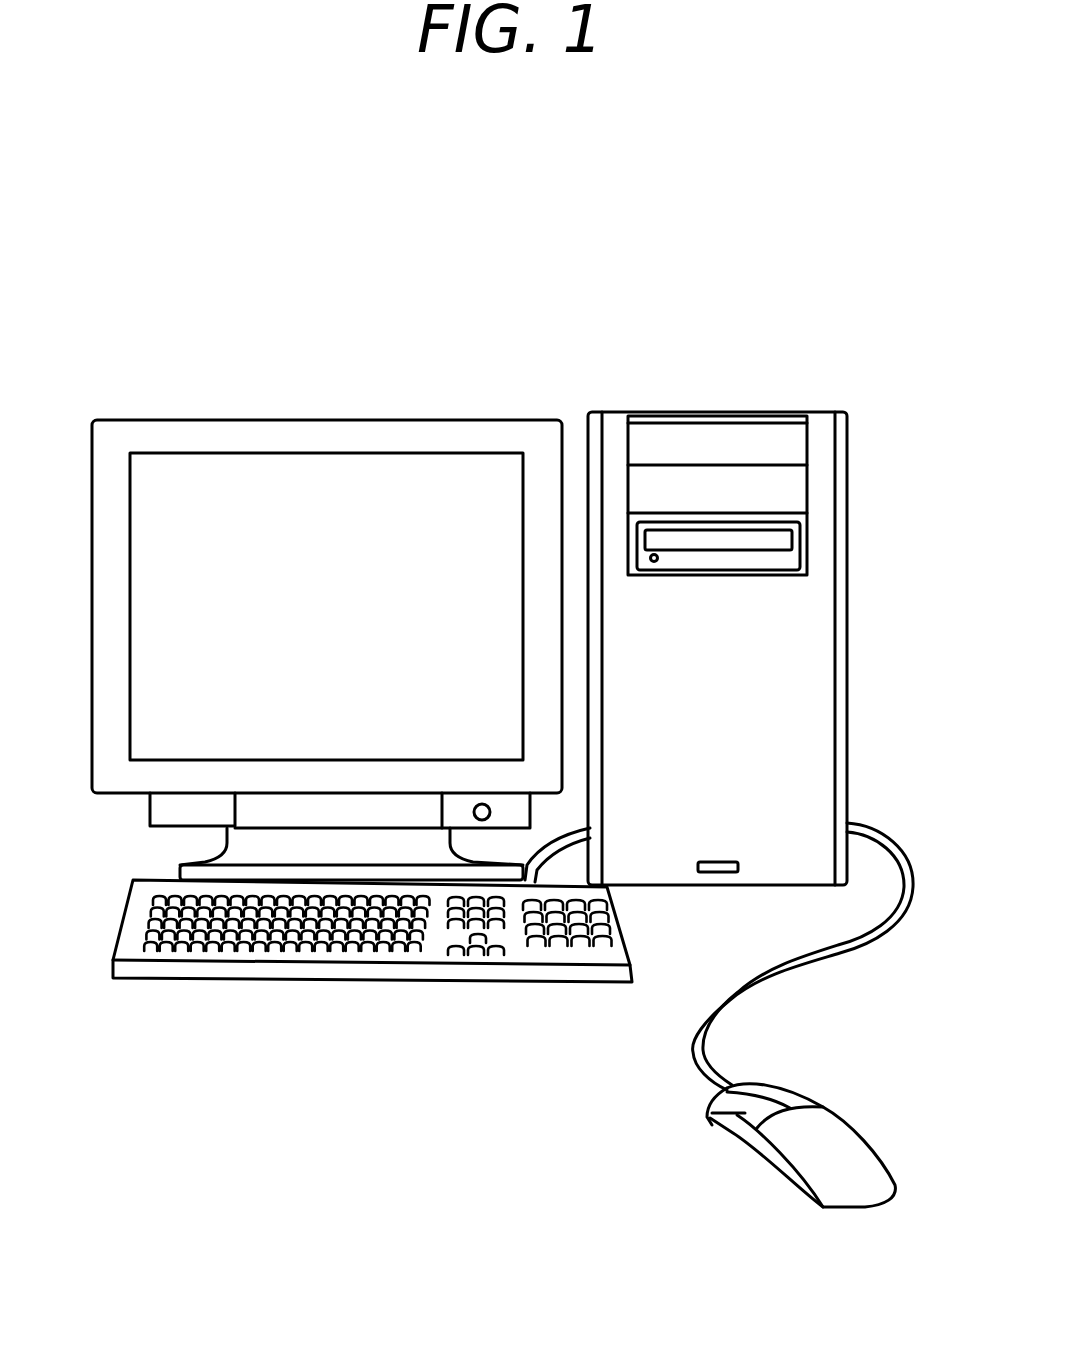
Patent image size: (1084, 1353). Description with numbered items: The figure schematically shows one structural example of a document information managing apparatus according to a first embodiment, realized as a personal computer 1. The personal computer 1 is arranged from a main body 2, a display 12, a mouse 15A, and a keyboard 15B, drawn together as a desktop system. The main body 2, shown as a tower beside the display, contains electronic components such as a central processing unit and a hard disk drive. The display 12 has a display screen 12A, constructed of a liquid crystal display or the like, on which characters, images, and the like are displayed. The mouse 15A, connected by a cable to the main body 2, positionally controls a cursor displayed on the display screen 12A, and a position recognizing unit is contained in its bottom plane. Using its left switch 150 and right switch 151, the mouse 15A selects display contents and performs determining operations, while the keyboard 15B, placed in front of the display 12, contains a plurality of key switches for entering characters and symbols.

The personal computer 1 is at (757, 330).
The main body 2 is at (823, 473).
The display 12 is at (143, 417).
The display screen 12A is at (315, 482).
The mouse 15A is at (847, 1177).
The keyboard 15B is at (172, 945).
The left switch 150 is at (713, 1130).
The right switch 151 is at (787, 1097).